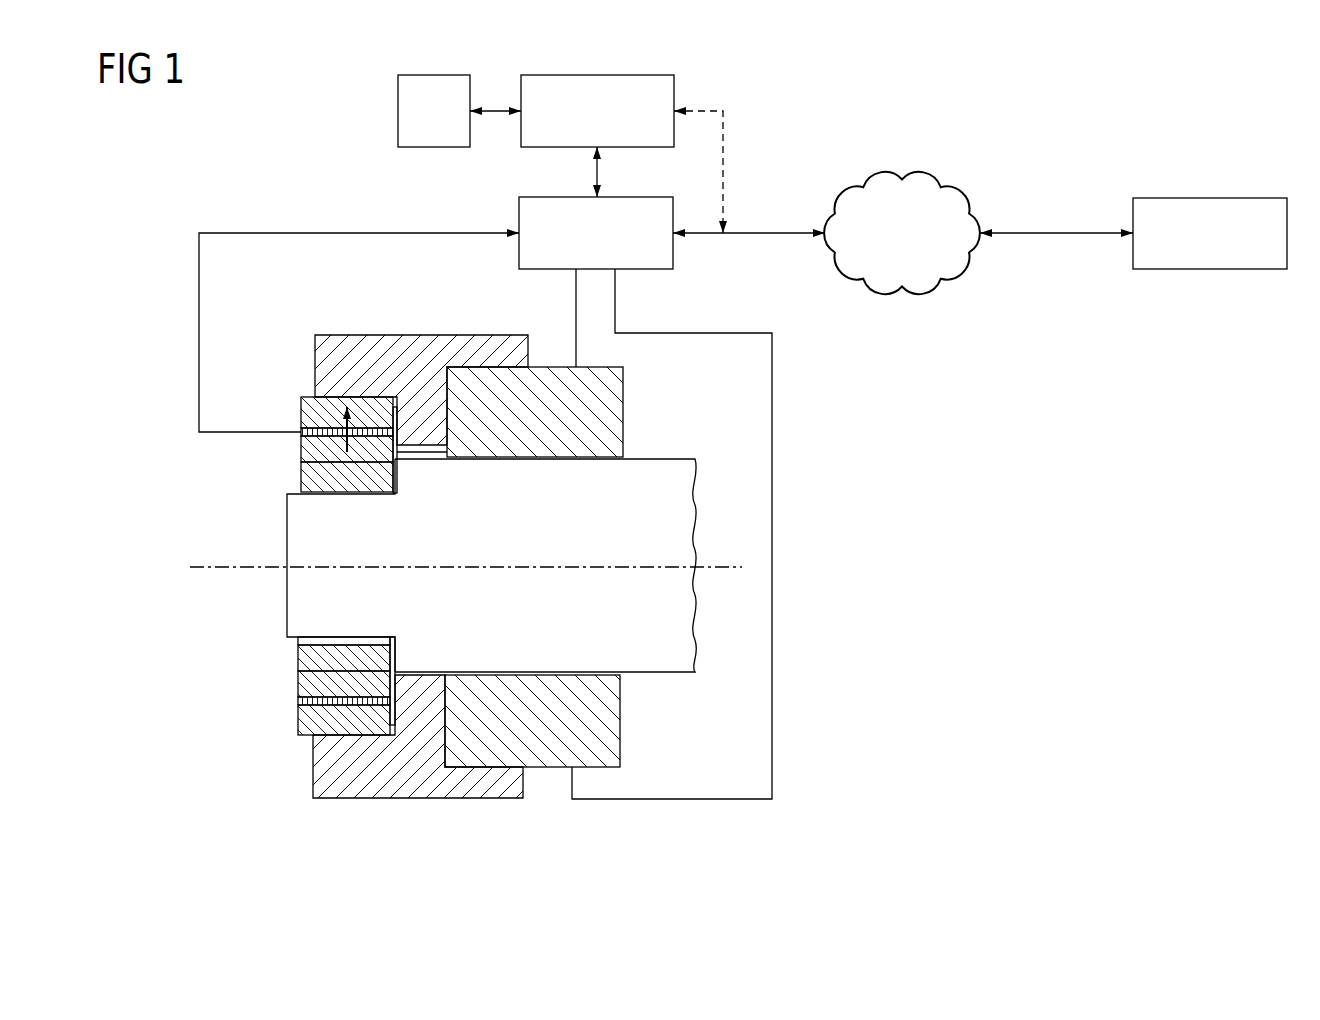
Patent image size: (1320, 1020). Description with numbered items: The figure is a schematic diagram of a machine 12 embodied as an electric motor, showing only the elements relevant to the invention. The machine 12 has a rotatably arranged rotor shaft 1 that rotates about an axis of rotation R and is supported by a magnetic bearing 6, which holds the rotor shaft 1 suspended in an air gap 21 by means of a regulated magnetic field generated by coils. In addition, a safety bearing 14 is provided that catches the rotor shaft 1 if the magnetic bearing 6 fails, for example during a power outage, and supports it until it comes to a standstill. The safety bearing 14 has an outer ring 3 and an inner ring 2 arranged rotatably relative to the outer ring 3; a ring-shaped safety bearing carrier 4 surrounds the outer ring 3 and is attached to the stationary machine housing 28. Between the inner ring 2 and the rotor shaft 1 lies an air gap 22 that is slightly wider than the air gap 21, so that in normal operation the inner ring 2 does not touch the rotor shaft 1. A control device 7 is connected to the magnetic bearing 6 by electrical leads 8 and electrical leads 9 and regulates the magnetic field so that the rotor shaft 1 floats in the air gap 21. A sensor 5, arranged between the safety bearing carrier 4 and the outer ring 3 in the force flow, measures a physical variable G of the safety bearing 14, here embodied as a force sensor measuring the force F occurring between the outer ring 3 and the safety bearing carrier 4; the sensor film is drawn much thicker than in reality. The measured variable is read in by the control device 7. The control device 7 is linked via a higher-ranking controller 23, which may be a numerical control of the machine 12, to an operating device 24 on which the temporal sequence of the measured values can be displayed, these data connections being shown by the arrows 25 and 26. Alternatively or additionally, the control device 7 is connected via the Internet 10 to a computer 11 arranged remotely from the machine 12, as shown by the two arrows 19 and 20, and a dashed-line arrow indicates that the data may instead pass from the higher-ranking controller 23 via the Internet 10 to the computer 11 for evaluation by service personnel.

The rotor shaft 1 is at (295, 580).
The inner ring 2 is at (310, 473).
The outer ring 3 is at (312, 450).
The safety bearing carrier 4 is at (316, 406).
The sensor 5 is at (310, 433).
The magnetic bearing 6 is at (613, 388).
The control device 7 is at (510, 212).
The electrical leads 8 is at (576, 312).
The electrical leads 9 is at (615, 312).
The Internet 10 is at (955, 190).
The computer 11 is at (1228, 198).
The machine 12 is at (262, 212).
The safety bearing 14 is at (298, 670).
The arrow 19 is at (750, 233).
The arrow 20 is at (1035, 233).
The air gap 21 is at (620, 457).
The air gap 22 is at (300, 643).
The higher-ranking controller 23 is at (674, 88).
The operating device 24 is at (398, 100).
The arrow 25 is at (601, 172).
The arrow 26 is at (492, 110).
The machine housing 28 is at (366, 338).
The force F is at (352, 446).
The physical variable G is at (390, 232).
The axis of rotation R is at (213, 566).